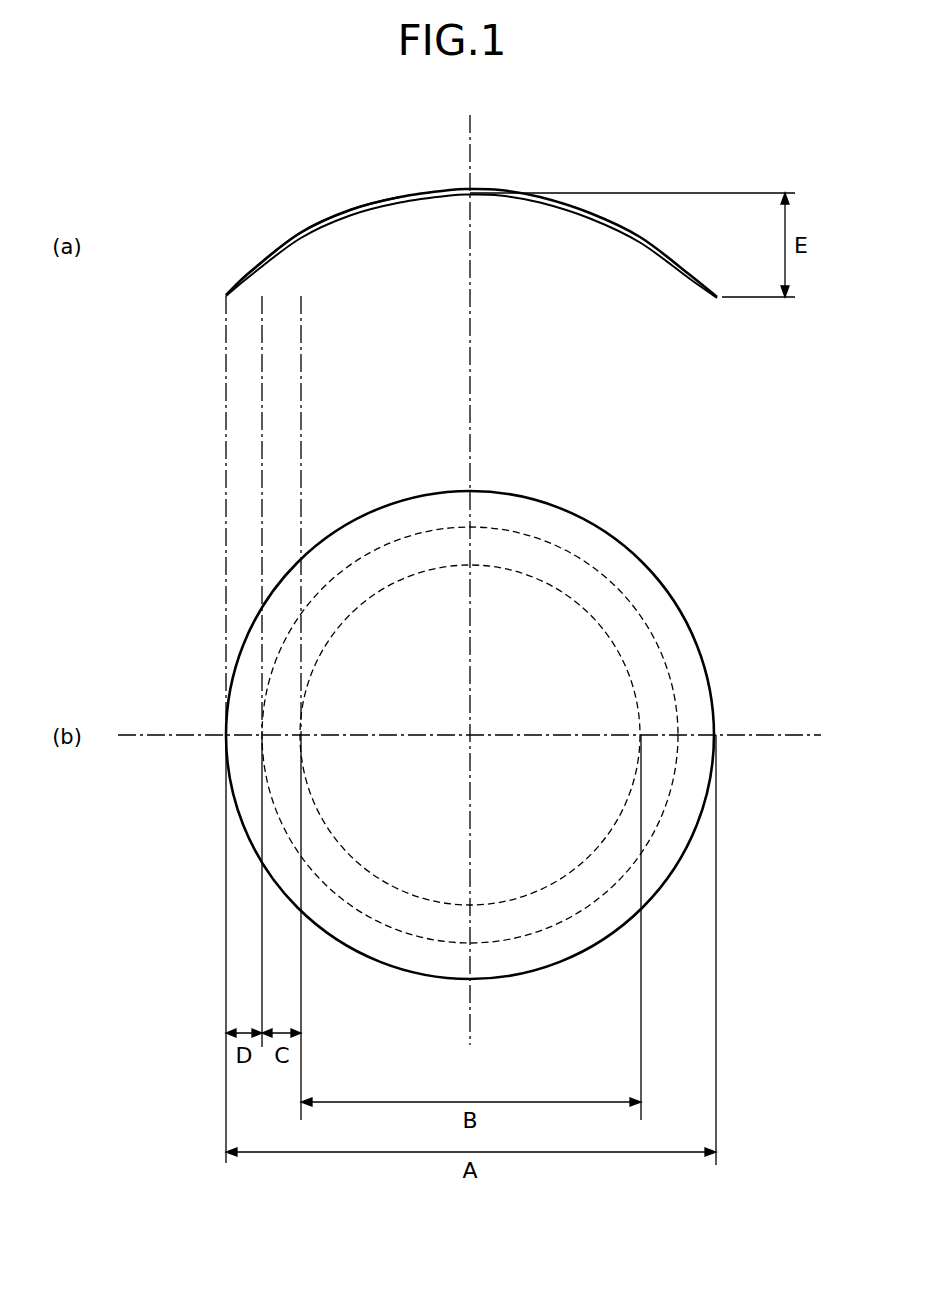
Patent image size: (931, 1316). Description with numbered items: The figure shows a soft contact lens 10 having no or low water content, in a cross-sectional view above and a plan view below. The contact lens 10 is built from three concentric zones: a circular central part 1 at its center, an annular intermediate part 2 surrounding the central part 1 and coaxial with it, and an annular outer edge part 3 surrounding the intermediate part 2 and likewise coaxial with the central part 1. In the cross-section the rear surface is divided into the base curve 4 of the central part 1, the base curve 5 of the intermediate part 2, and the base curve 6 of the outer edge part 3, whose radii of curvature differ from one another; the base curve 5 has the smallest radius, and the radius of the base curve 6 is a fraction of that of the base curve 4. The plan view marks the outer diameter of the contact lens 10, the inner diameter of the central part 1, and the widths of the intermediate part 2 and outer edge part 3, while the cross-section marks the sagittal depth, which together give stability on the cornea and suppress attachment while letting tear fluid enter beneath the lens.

The contact lens 10 is at (572, 147).
The central part 1 is at (510, 602).
The intermediate part 2 is at (565, 580).
The outer edge part 3 is at (613, 570).
The base curve of the central part 4 is at (318, 230).
The base curve of the intermediate part 5 is at (278, 258).
The base curve of the outer edge part 6 is at (238, 290).